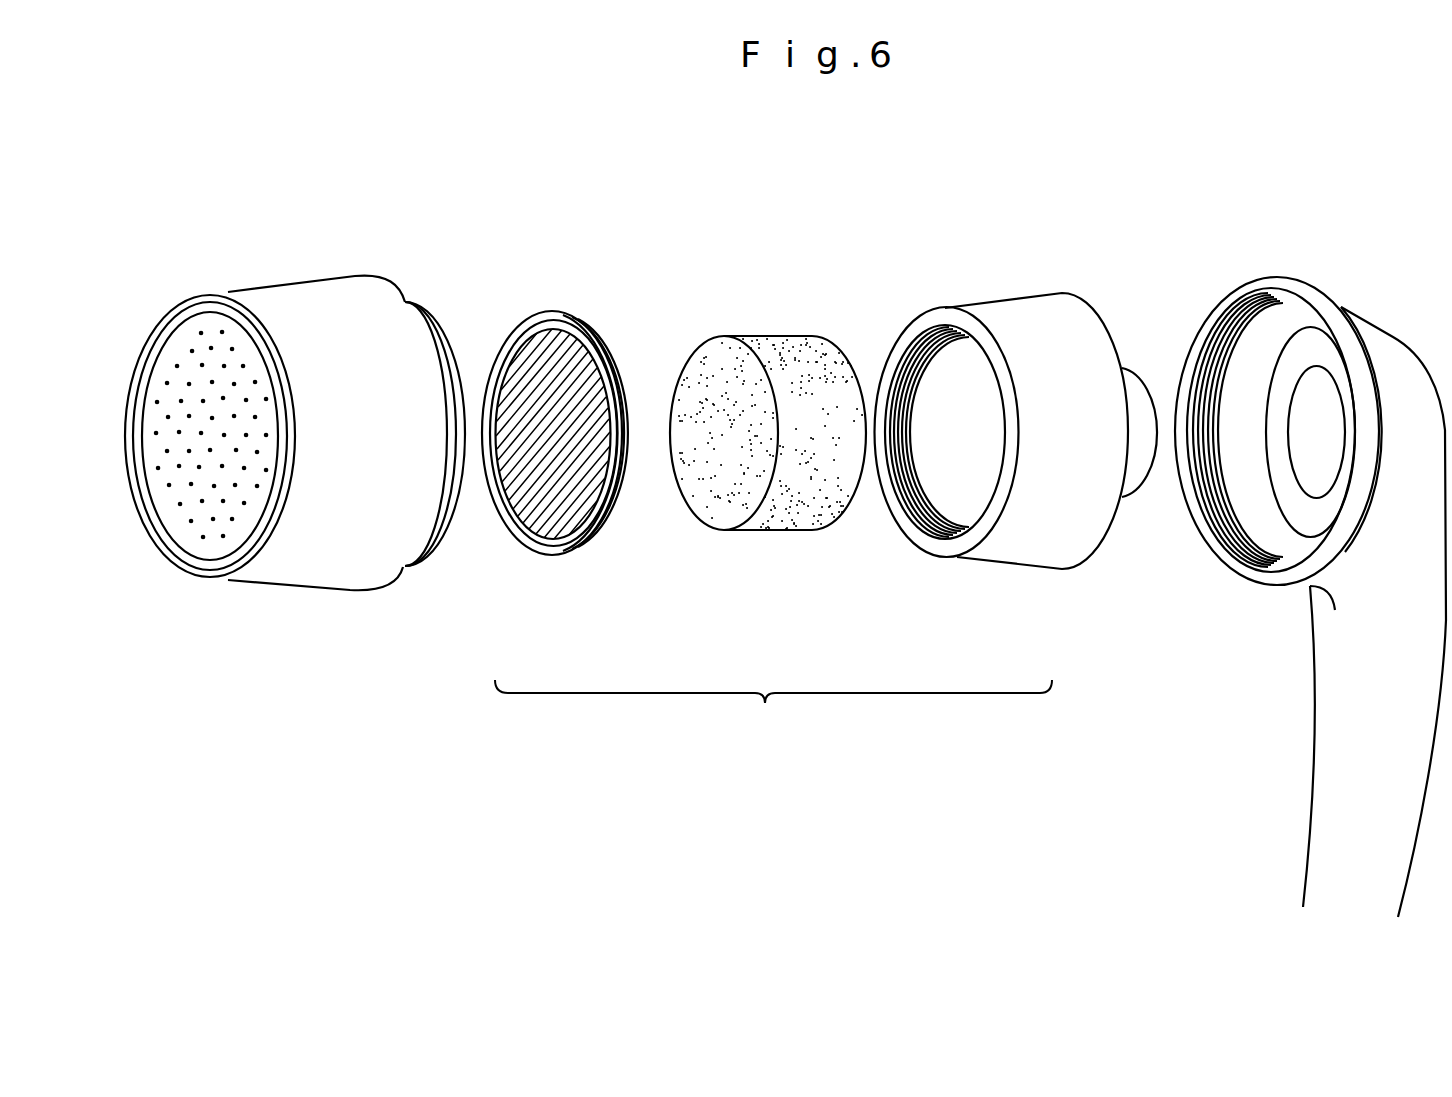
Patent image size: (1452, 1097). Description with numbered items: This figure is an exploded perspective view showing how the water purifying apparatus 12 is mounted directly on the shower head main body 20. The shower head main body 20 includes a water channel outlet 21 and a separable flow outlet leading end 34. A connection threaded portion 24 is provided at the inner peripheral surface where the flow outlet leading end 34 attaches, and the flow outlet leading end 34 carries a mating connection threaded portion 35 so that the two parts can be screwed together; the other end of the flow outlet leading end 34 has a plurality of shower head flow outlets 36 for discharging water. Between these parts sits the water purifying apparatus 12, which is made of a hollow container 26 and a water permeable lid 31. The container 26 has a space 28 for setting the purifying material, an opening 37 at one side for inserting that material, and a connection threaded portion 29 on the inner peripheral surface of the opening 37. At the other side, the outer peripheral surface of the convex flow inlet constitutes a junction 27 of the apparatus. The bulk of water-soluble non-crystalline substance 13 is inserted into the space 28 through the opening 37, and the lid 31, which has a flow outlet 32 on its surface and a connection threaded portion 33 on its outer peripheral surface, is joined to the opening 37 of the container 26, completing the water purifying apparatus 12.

The water purifying apparatus 12 is at (773, 712).
The water-soluble non-crystalline substance 13 is at (774, 338).
The shower head main body 20 is at (1281, 560).
The water channel outlet 21 is at (1323, 397).
The connection threaded portion 24 is at (1230, 318).
The hollow container 26 is at (981, 431).
The junction 27 is at (1137, 498).
The space 28 is at (940, 492).
The connection threaded portion 29 is at (918, 508).
The water permeable lid 31 is at (579, 489).
The flow outlet 32 is at (503, 518).
The connection threaded portion 33 is at (615, 530).
The flow outlet leading end 34 is at (290, 285).
The connection threaded portion 35 is at (416, 303).
The shower head flow outlets 36 is at (208, 347).
The opening 37 is at (897, 346).